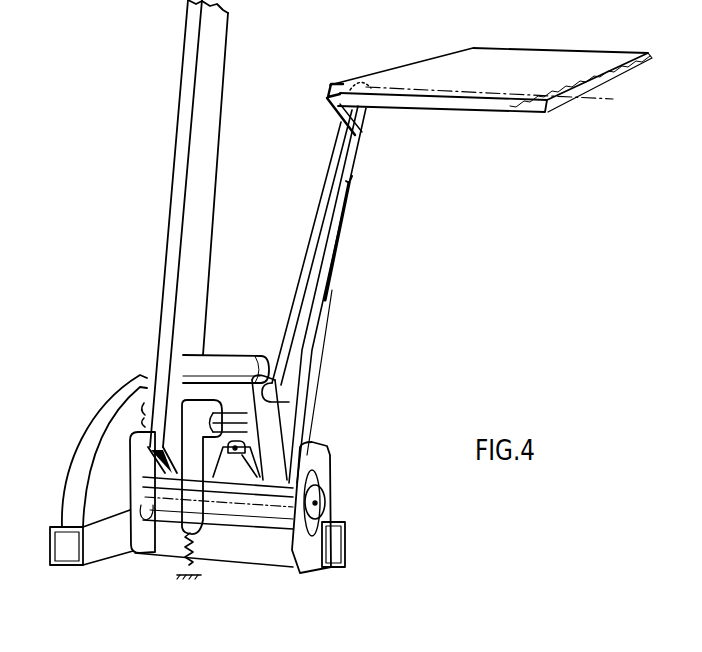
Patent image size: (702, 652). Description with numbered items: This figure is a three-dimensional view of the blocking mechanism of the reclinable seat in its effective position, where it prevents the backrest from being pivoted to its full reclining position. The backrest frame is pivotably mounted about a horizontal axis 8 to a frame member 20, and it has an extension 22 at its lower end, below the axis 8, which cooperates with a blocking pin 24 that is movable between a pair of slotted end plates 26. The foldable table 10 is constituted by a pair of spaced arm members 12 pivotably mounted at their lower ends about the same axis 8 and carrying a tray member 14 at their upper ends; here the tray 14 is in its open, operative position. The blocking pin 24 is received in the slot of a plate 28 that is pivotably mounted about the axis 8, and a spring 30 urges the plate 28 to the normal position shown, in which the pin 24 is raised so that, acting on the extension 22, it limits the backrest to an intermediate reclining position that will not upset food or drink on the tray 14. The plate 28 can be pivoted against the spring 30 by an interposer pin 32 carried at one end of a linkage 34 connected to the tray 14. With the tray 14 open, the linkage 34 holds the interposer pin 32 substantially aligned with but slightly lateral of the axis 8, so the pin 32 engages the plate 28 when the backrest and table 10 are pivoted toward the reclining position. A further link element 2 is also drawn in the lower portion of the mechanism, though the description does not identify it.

The foldable table 10 is at (521, 32).
The tray member 14 is at (547, 80).
The arm member 12 is at (330, 173).
The linkage 34 is at (350, 186).
The horizontal axis 8 is at (147, 377).
The frame member 20 is at (91, 425).
The extension 22 is at (153, 550).
The interposer pin 32 is at (237, 463).
The link 2 is at (249, 427).
The plate 28 is at (205, 521).
The spring 30 is at (187, 567).
The blocking pin 24 is at (277, 495).
The slotted end plate 26 is at (317, 503).